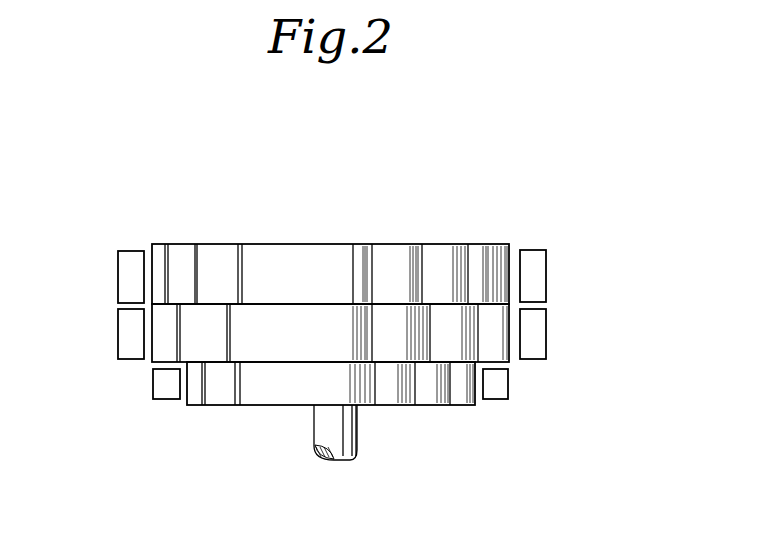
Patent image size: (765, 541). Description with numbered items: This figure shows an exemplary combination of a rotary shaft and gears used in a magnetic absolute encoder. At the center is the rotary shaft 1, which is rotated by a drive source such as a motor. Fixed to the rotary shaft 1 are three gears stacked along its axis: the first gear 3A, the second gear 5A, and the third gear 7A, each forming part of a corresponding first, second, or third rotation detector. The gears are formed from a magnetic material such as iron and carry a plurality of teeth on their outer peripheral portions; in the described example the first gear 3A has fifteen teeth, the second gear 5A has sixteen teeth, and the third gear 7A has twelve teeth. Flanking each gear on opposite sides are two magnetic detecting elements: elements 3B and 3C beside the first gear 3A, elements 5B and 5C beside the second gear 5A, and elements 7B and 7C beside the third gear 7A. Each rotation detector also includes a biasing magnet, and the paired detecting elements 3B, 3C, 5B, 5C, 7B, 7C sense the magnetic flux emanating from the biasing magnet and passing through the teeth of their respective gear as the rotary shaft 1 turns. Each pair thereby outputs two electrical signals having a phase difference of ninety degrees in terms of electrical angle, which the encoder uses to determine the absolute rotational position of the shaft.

The rotary shaft 1 is at (356, 431).
The first gear 3A is at (350, 253).
The magnetic detecting element 3B is at (118, 269).
The magnetic detecting element 3C is at (547, 273).
The second gear 5A is at (405, 347).
The magnetic detecting element 5B is at (118, 334).
The magnetic detecting element 5C is at (547, 338).
The third gear 7A is at (221, 383).
The magnetic detecting element 7B is at (153, 386).
The magnetic detecting element 7C is at (508, 387).